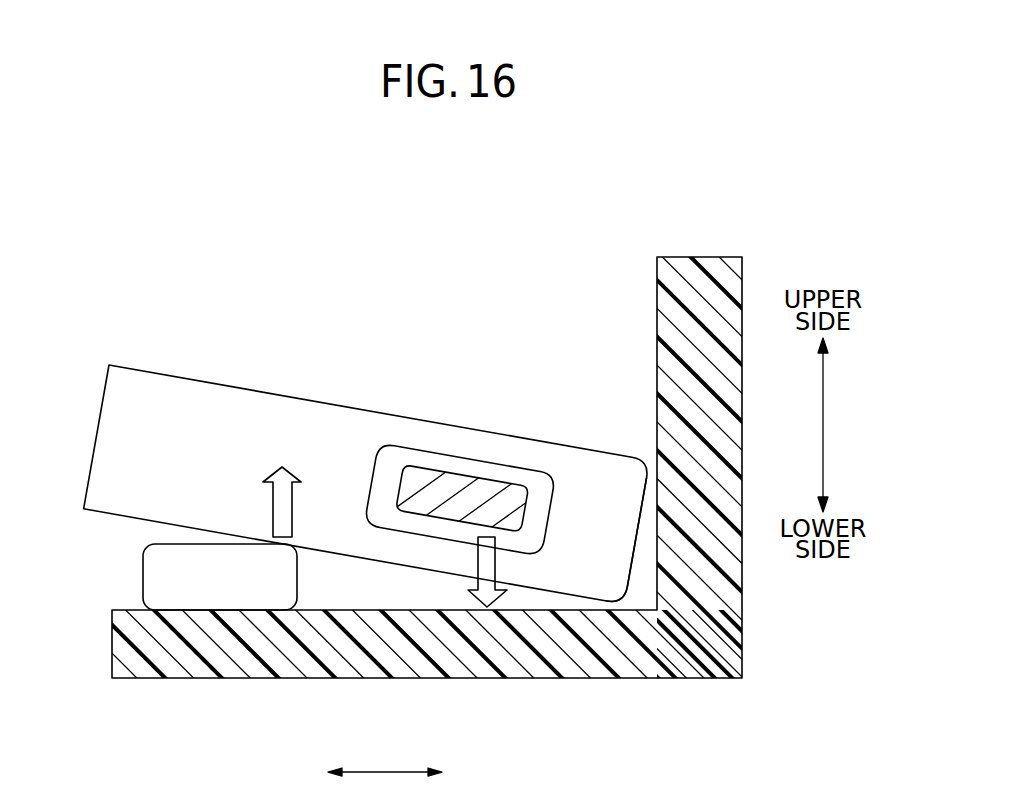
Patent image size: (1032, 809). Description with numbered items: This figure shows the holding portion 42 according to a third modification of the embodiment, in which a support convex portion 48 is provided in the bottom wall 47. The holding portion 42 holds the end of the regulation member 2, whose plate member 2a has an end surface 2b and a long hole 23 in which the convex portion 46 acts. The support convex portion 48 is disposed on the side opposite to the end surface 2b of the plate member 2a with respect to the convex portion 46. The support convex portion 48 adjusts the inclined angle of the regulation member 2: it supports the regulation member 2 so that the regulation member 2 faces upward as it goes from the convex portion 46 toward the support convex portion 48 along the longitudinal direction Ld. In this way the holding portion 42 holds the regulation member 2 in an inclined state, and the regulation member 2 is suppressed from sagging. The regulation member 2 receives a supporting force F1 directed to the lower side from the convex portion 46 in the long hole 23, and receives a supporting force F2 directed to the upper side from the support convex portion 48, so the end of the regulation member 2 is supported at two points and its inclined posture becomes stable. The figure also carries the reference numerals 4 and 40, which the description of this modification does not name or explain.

The liquid ejecting apparatus 4 is at (394, 444).
The holding portion 42 is at (602, 280).
The support member 40 is at (430, 465).
The bottom wall 47 is at (532, 670).
The support convex portion 48 is at (250, 593).
The regulation member 2 is at (394, 535).
The plate member 2a is at (394, 535).
The end surface 2b is at (635, 570).
The long hole 23 is at (469, 451).
The convex portion 46 is at (460, 483).
The supporting force F1 is at (500, 571).
The supporting force F2 is at (273, 505).
The longitudinal direction Ld is at (385, 759).